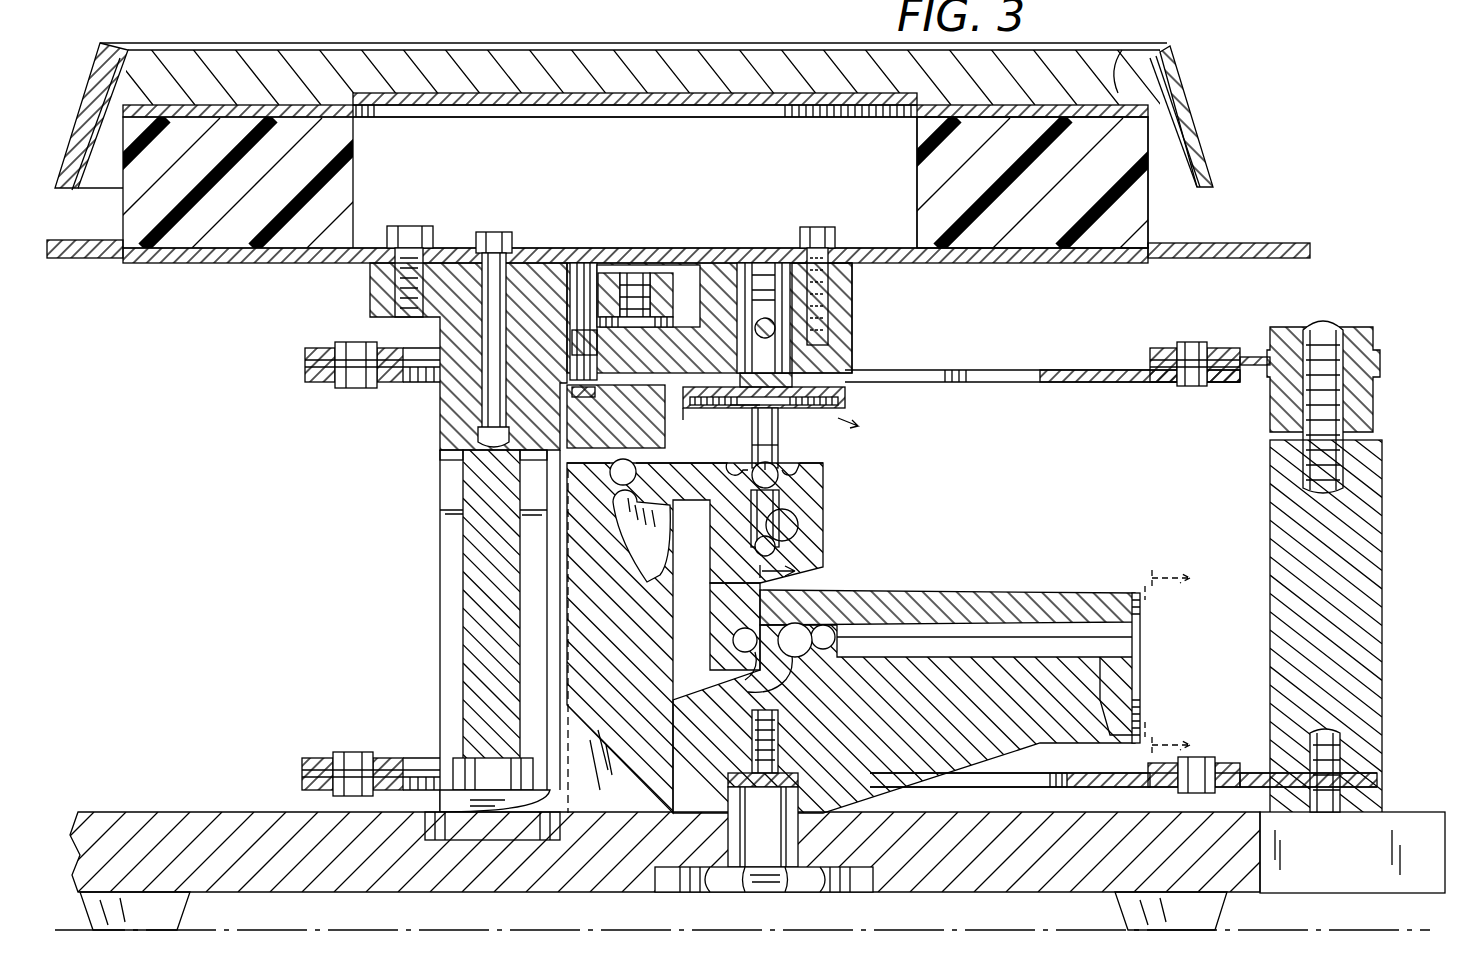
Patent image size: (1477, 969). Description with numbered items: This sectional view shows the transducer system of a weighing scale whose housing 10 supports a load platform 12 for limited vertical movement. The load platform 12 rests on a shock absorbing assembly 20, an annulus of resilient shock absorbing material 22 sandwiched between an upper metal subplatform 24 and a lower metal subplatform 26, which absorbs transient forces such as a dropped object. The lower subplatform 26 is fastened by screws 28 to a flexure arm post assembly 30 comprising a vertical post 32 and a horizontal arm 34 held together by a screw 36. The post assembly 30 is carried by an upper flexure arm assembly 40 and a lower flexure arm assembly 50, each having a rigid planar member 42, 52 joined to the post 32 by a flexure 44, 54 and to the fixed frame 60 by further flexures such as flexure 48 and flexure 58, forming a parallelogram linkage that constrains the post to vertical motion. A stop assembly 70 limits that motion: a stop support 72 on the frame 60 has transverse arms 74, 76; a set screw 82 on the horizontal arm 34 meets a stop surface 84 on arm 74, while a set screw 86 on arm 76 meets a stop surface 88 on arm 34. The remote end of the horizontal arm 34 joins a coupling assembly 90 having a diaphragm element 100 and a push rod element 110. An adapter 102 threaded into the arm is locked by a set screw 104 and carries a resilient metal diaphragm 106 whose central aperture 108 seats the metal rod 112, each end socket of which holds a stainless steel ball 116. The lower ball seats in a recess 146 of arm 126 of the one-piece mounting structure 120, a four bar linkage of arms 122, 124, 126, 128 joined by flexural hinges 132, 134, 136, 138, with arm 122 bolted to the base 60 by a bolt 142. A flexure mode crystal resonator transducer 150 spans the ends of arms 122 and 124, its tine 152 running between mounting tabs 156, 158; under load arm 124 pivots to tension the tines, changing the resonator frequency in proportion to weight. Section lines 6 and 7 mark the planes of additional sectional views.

The section line 6 is at (809, 506).
The section line 7 is at (1179, 663).
The housing 10 is at (1290, 243).
The load platform 12 is at (1190, 128).
The shock absorbing assembly 20 is at (643, 214).
The resilient shock absorbing material 22 is at (1148, 214).
The upper metal subplatform 24 is at (1122, 50).
The lower metal subplatform 26 is at (280, 265).
The screws 28 is at (385, 268).
The flexure arm post assembly 30 is at (437, 510).
The vertical post 32 is at (440, 578).
The horizontal arm 34 is at (731, 278).
The screw 36 is at (493, 232).
The upper flexure arm assembly 40 is at (1042, 386).
The rigid planar member 42 is at (1135, 385).
The flexure 44 is at (410, 385).
The flexure 48 is at (1262, 345).
The lower flexure arm assembly 50 is at (1005, 795).
The rigid planar member 52 is at (1123, 786).
The flexure 54 is at (418, 770).
The flexure 58 is at (1270, 775).
The frame 60 is at (1420, 800).
The stop assembly 70 is at (656, 260).
The stop support 72 is at (683, 627).
The transverse arm 74 is at (705, 470).
The transverse arm 76 is at (660, 275).
The set screw 82 is at (570, 290).
The stop surface 84 is at (578, 397).
The set screw 86 is at (628, 283).
The stop surface 88 is at (649, 313).
The coupling assembly 90 is at (817, 448).
The diaphragm element 100 is at (888, 432).
The adapter 102 is at (757, 263).
The set screw 104 is at (852, 340).
The resilient metal diaphragm 106 is at (848, 412).
The aperture 108 is at (745, 408).
The push rod element 110 is at (793, 459).
The metal rod 112 is at (755, 452).
The stainless steel ball 116 is at (755, 445).
The mounting structure 120 is at (904, 676).
The arm 122 is at (645, 760).
The arm 124 is at (965, 622).
The arm 126 is at (710, 555).
The arm 128 is at (686, 424).
The flexural hinge 132 is at (838, 640).
The flexural hinge 134 is at (767, 662).
The flexural hinge 136 is at (758, 525).
The flexural hinge 138 is at (660, 580).
The bolt 142 is at (780, 885).
The recess 146 is at (778, 546).
The flexure mode crystal resonator transducer 150 is at (1170, 686).
The tine 152 is at (1142, 648).
The mounting tab 156 is at (1142, 710).
The mounting tab 158 is at (1142, 612).